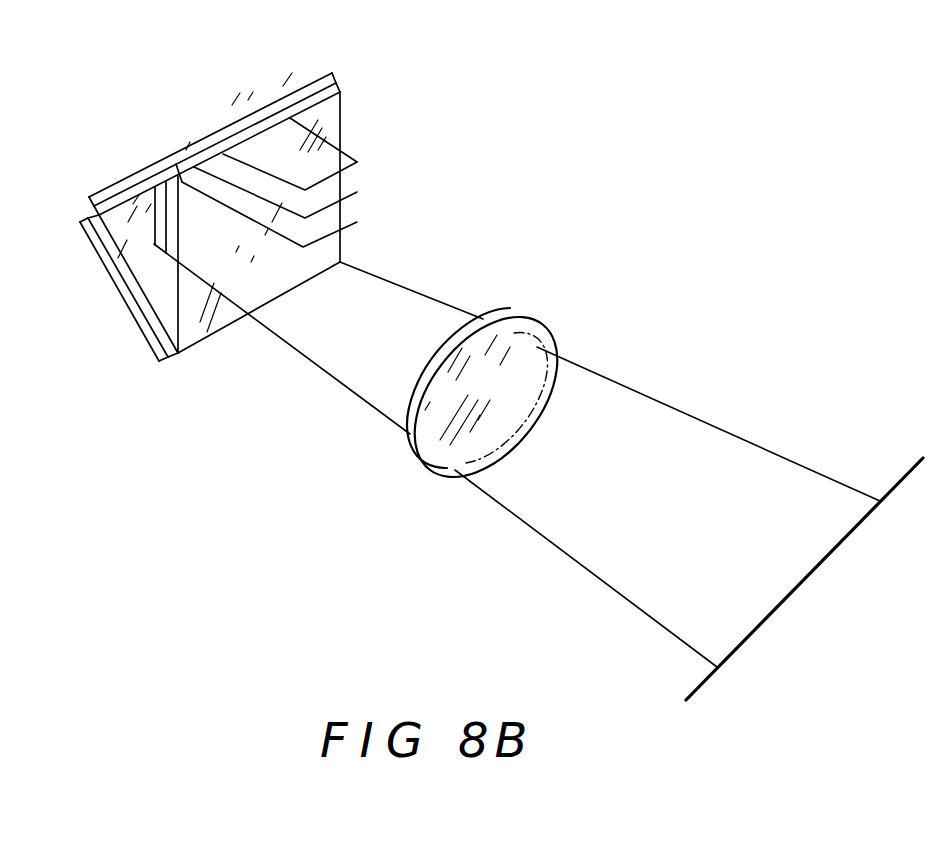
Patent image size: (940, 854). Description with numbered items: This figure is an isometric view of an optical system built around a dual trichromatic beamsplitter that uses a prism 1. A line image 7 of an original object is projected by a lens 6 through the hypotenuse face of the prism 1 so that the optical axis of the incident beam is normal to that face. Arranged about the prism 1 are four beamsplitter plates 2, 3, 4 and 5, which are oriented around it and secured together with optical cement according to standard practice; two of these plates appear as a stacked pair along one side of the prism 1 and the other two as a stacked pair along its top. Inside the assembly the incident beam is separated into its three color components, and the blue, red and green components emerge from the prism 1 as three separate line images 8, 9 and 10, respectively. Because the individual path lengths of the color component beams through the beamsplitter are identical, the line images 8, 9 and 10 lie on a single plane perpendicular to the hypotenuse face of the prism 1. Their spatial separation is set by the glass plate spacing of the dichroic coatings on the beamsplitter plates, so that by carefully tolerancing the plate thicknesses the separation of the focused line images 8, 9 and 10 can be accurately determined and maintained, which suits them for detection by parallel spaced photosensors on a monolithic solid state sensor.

The prism 1 is at (338, 127).
The beamsplitter plate 2 is at (178, 356).
The beamsplitter plate 3 is at (152, 350).
The beamsplitter plate 4 is at (340, 91).
The beamsplitter plate 5 is at (332, 73).
The lens 6 is at (540, 322).
The line image 7 is at (744, 641).
The line image 8 is at (357, 162).
The line image 9 is at (357, 192).
The line image 10 is at (357, 222).